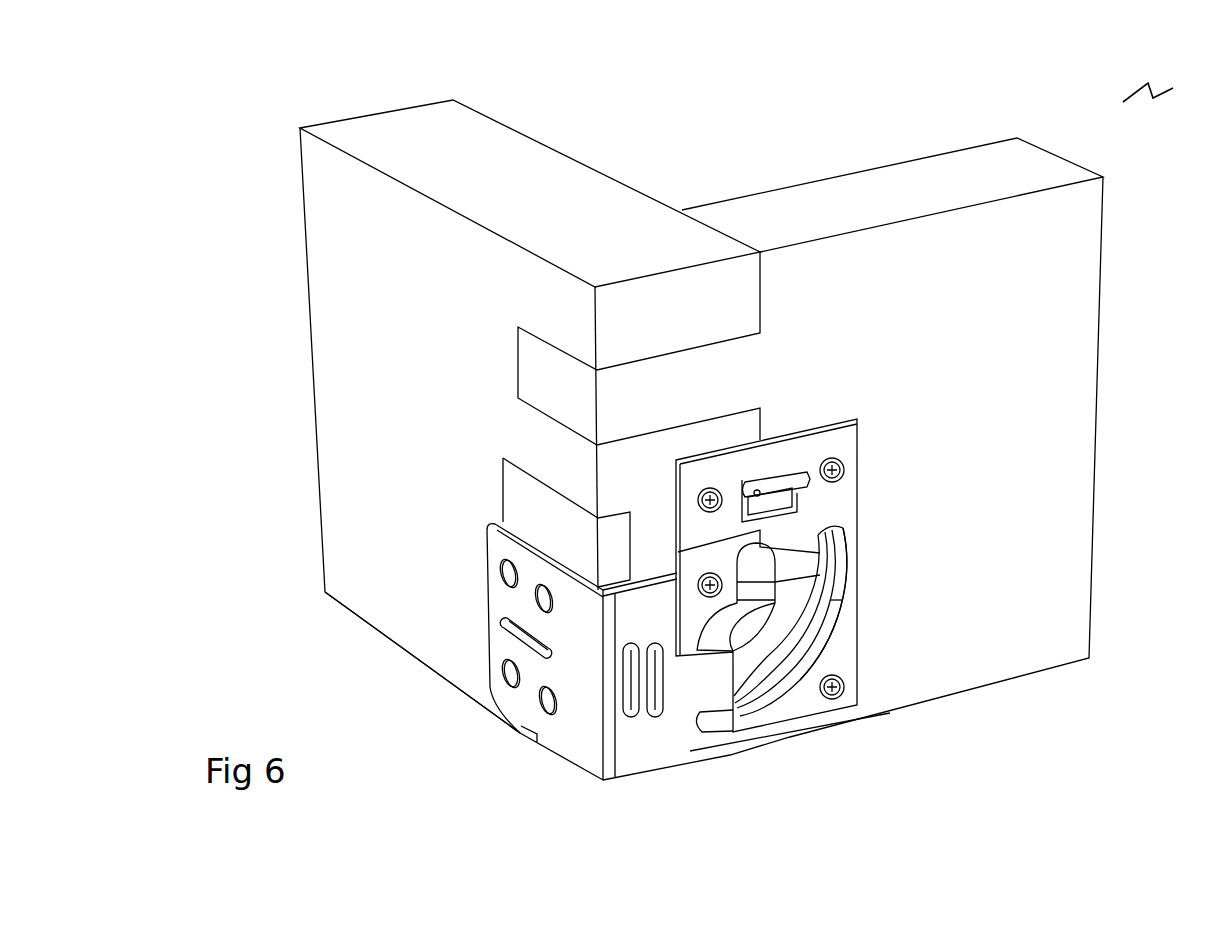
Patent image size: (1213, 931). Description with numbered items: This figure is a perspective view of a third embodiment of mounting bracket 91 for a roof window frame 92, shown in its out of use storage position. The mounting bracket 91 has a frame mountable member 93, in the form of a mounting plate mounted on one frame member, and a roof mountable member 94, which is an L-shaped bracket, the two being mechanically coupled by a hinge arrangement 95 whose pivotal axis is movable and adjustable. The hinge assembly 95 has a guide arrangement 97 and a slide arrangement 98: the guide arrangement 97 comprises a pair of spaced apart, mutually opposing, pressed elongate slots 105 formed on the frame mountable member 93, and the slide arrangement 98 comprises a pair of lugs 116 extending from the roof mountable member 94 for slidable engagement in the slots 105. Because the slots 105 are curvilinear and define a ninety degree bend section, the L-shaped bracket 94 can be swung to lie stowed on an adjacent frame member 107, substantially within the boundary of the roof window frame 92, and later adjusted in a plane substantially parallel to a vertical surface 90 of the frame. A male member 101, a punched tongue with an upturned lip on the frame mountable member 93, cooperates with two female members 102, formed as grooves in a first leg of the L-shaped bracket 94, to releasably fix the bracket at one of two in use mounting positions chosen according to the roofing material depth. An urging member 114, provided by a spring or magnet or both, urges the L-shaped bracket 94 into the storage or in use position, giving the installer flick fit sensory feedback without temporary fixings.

The vertical surface 90 is at (1032, 615).
The mounting bracket 91 is at (1155, 83).
The roof window frame 92 is at (538, 190).
The frame mountable member 93 is at (828, 510).
The roof mountable member 94 is at (575, 728).
The hinge arrangement 95 is at (715, 723).
The guide arrangement 97 is at (750, 630).
The slide arrangement 98 is at (720, 698).
The male member 101 is at (777, 480).
The female members 102 is at (650, 707).
The elongate slots 105 is at (830, 603).
The adjacent frame member 107 is at (390, 598).
The urging member 114 is at (797, 563).
The lugs 116 is at (752, 632).